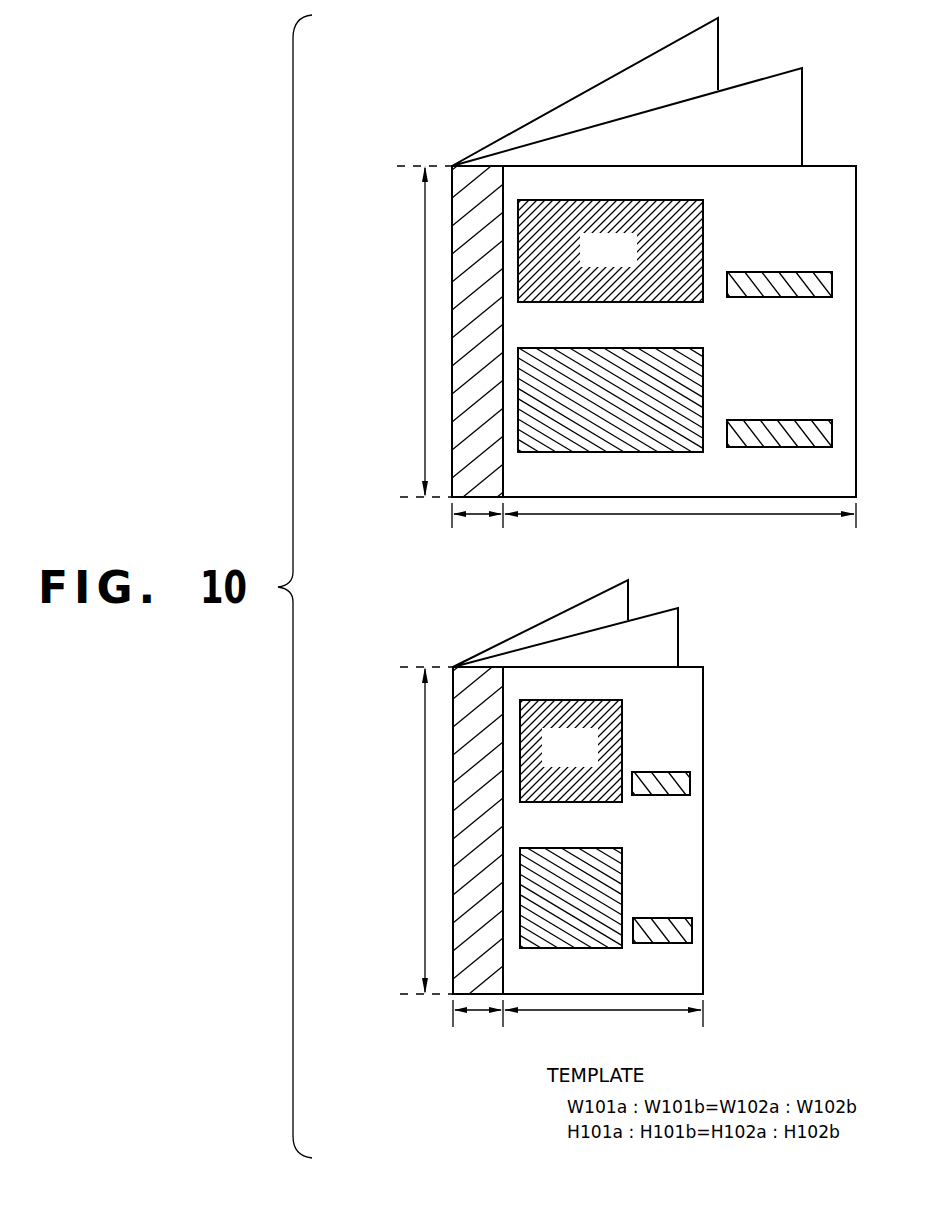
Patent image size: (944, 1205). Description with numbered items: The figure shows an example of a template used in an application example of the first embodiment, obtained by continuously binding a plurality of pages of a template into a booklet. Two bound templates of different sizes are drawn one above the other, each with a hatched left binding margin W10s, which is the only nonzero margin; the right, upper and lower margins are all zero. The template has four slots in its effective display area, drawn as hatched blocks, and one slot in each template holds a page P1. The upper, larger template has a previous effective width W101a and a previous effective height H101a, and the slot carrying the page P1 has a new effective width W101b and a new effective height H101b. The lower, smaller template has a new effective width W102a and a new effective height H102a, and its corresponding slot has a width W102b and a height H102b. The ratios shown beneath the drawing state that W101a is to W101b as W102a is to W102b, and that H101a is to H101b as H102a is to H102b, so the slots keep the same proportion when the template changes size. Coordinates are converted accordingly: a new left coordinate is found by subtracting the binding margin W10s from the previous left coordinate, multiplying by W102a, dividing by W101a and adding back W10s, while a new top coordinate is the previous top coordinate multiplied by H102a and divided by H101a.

The binding margin W10s is at (503, 474).
The previous effective width W101a is at (654, 523).
The previous effective height H101a is at (407, 331).
The new effective width W101b is at (610, 239).
The new effective height H101b is at (641, 251).
The new effective width W102a is at (578, 1018).
The new effective height H102a is at (404, 830).
The new effective width W102b is at (571, 740).
The new effective height H102b is at (601, 751).
The page P1 is at (589, 501).